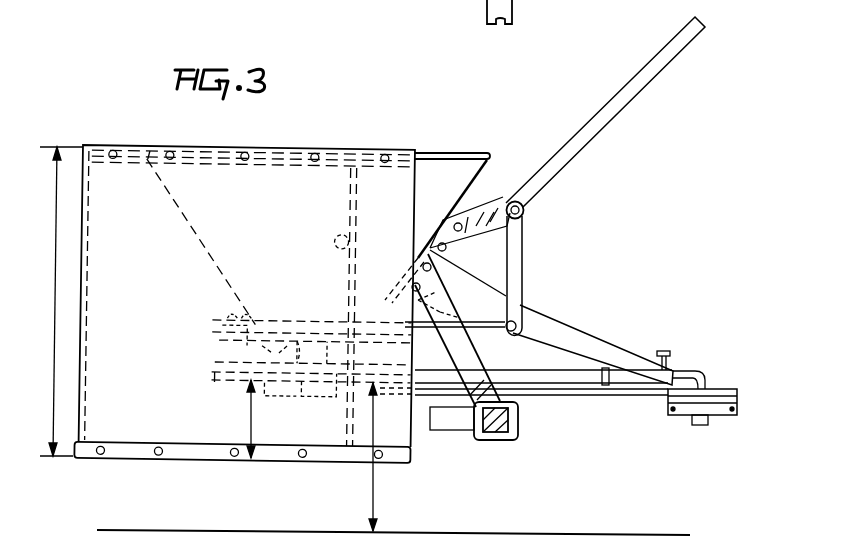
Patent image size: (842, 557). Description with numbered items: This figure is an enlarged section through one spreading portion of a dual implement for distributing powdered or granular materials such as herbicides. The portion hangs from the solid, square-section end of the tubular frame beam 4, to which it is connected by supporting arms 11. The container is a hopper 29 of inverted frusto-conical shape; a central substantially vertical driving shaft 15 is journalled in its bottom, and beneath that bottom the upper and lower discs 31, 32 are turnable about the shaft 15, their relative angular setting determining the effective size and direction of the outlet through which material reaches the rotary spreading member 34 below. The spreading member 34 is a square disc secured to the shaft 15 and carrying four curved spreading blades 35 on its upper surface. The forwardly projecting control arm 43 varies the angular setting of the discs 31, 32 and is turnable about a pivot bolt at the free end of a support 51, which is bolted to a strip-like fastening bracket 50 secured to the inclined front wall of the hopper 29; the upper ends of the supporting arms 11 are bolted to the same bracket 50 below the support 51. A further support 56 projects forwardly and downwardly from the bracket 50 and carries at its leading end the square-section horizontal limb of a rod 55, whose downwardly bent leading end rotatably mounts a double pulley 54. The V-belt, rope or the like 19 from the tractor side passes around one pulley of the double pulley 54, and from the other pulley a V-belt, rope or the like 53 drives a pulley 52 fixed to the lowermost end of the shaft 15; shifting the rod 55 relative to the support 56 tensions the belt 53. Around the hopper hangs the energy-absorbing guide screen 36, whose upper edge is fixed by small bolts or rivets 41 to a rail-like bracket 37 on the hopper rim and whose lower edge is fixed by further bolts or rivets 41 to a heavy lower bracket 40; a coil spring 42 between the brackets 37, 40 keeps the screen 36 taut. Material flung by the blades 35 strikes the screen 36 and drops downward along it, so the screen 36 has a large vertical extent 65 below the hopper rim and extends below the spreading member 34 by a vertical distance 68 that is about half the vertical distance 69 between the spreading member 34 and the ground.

The frame beam 4 is at (497, 440).
The supporting arms 11 is at (450, 356).
The driving shaft 15 is at (312, 398).
The V-belt, rope or the like 19 is at (668, 412).
The hopper 29 is at (452, 161).
The upper disc 31 is at (216, 320).
The lower disc 32 is at (214, 332).
The rotary spreading member 34 is at (215, 376).
The spreading blades 35 is at (217, 362).
The guide screen 36 is at (89, 208).
The rail-like bracket 37 is at (150, 150).
The lower bracket 40 is at (147, 458).
The small bolts or rivets 41 is at (250, 155).
The compression spring or coil spring 42 is at (350, 193).
The control arm 43 is at (630, 95).
The fastening bracket 50 is at (460, 208).
The support 51 is at (508, 195).
The pulley 52 is at (275, 398).
The V-belt, rope or the like 53 is at (598, 398).
The double pulley 54 is at (690, 418).
The rod 55 is at (690, 370).
The support 56 is at (568, 320).
The vertical extent 65 is at (61, 301).
The vertical distance 68 is at (250, 428).
The vertical distance 69 is at (372, 484).